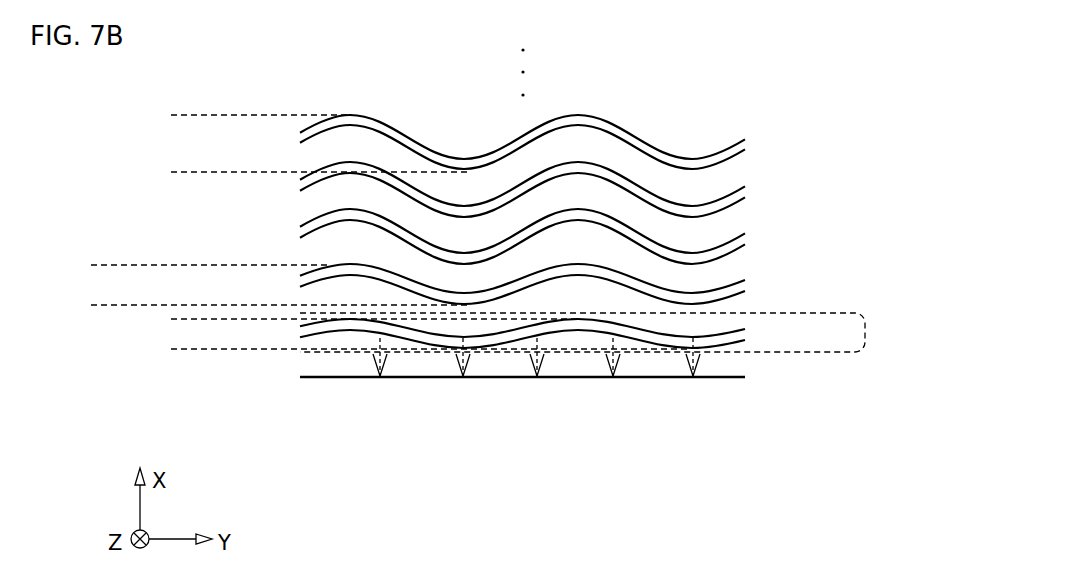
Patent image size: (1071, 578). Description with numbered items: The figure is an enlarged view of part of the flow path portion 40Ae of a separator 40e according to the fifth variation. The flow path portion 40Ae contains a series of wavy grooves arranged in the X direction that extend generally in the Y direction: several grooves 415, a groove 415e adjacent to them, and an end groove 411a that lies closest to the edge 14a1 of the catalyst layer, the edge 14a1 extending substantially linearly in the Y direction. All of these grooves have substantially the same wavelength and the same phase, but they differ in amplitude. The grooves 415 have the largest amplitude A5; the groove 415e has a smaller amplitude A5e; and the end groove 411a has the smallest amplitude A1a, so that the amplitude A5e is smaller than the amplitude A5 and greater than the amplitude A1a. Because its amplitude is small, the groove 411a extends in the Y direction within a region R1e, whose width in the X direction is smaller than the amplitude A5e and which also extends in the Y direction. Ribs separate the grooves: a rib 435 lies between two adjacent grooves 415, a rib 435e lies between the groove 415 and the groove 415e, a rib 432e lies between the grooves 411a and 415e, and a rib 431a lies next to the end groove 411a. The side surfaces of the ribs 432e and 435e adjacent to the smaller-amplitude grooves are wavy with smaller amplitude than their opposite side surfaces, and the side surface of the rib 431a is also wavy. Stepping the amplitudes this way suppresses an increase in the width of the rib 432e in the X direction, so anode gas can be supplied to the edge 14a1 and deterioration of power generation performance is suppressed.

The groove 415 is at (745, 146).
The groove 415e is at (745, 286).
The end groove 411a is at (745, 335).
The rib 431a is at (302, 374).
The edge 14a1 is at (463, 379).
The rib 435 is at (300, 151).
The rib 435e is at (300, 255).
The rib 432e is at (300, 292).
The region R1e is at (862, 315).
The separator 40e is at (762, 85).
The flow path portion 40Ae is at (850, 150).
The amplitude A5 is at (171, 83).
The amplitude A5e is at (91, 237).
The amplitude A1a is at (171, 292).